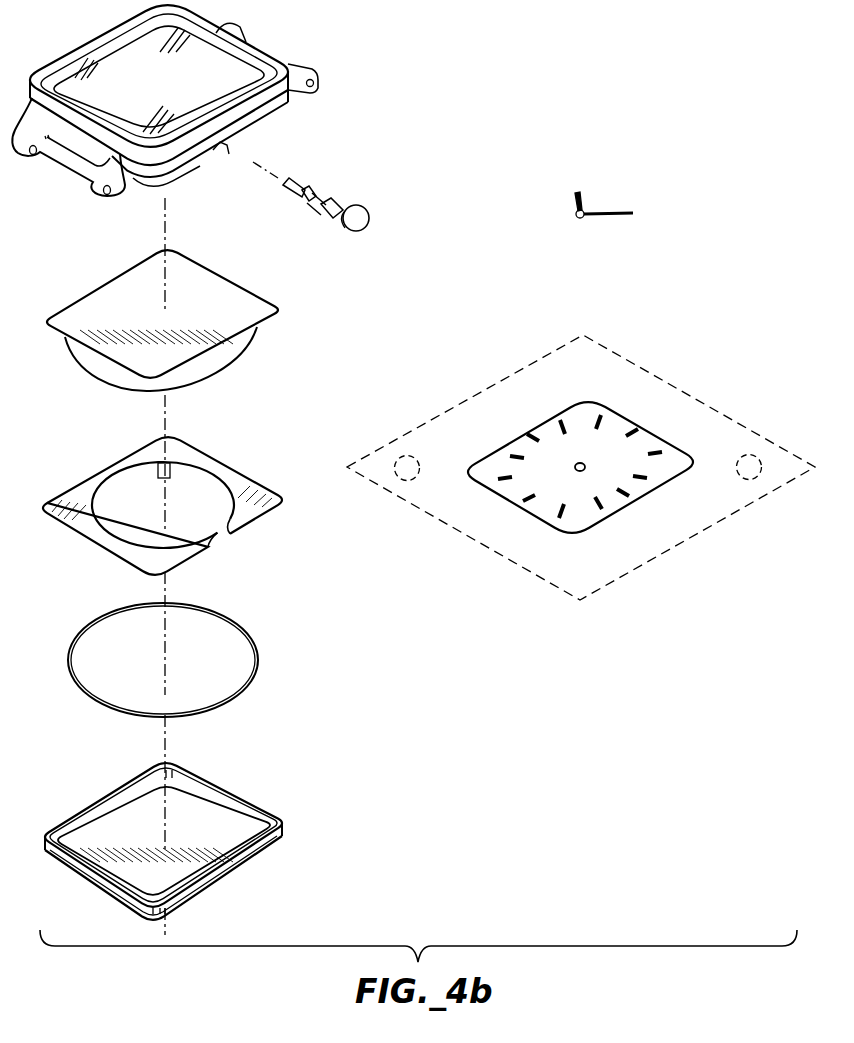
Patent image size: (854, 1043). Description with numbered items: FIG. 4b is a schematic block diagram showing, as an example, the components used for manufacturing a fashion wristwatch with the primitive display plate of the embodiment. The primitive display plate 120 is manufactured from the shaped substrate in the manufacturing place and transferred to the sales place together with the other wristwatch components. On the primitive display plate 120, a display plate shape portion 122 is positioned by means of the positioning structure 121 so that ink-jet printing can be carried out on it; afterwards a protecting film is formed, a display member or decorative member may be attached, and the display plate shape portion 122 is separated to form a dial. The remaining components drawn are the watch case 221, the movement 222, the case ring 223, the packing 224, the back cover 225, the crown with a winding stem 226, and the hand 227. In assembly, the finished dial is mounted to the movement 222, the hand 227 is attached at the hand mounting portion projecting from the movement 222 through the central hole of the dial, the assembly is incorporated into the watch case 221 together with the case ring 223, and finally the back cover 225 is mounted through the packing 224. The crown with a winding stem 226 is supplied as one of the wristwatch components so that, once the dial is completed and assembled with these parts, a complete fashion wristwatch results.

The watch case 221 is at (262, 47).
The movement 222 is at (243, 287).
The case ring 223 is at (245, 472).
The packing 224 is at (243, 630).
The back cover 225 is at (243, 800).
The crown with a winding stem 226 is at (365, 206).
The hand 227 is at (598, 215).
The primitive display plate 120 is at (692, 537).
The positioning structure 121 is at (397, 477).
The display plate shape portion 122 is at (623, 410).